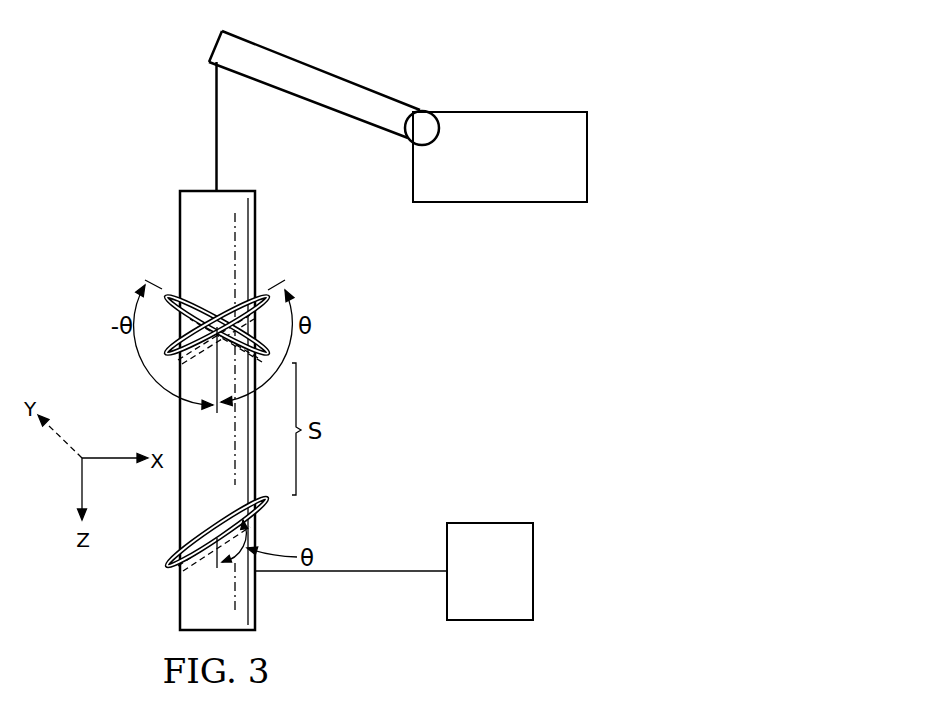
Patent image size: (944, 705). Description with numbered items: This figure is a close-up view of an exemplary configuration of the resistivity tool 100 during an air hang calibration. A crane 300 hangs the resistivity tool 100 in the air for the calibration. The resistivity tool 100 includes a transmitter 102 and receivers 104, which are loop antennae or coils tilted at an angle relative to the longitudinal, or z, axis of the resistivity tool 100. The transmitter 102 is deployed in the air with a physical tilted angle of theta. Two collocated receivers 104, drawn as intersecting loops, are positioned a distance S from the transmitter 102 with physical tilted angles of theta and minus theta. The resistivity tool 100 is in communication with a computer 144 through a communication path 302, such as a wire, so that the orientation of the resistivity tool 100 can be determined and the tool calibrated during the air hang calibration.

The resistivity tool 100 is at (149, 169).
The transmitter 102 is at (268, 513).
The receivers 104 is at (172, 290).
The computer 144 is at (491, 522).
The crane 300 is at (553, 71).
The communication path 302 is at (350, 573).